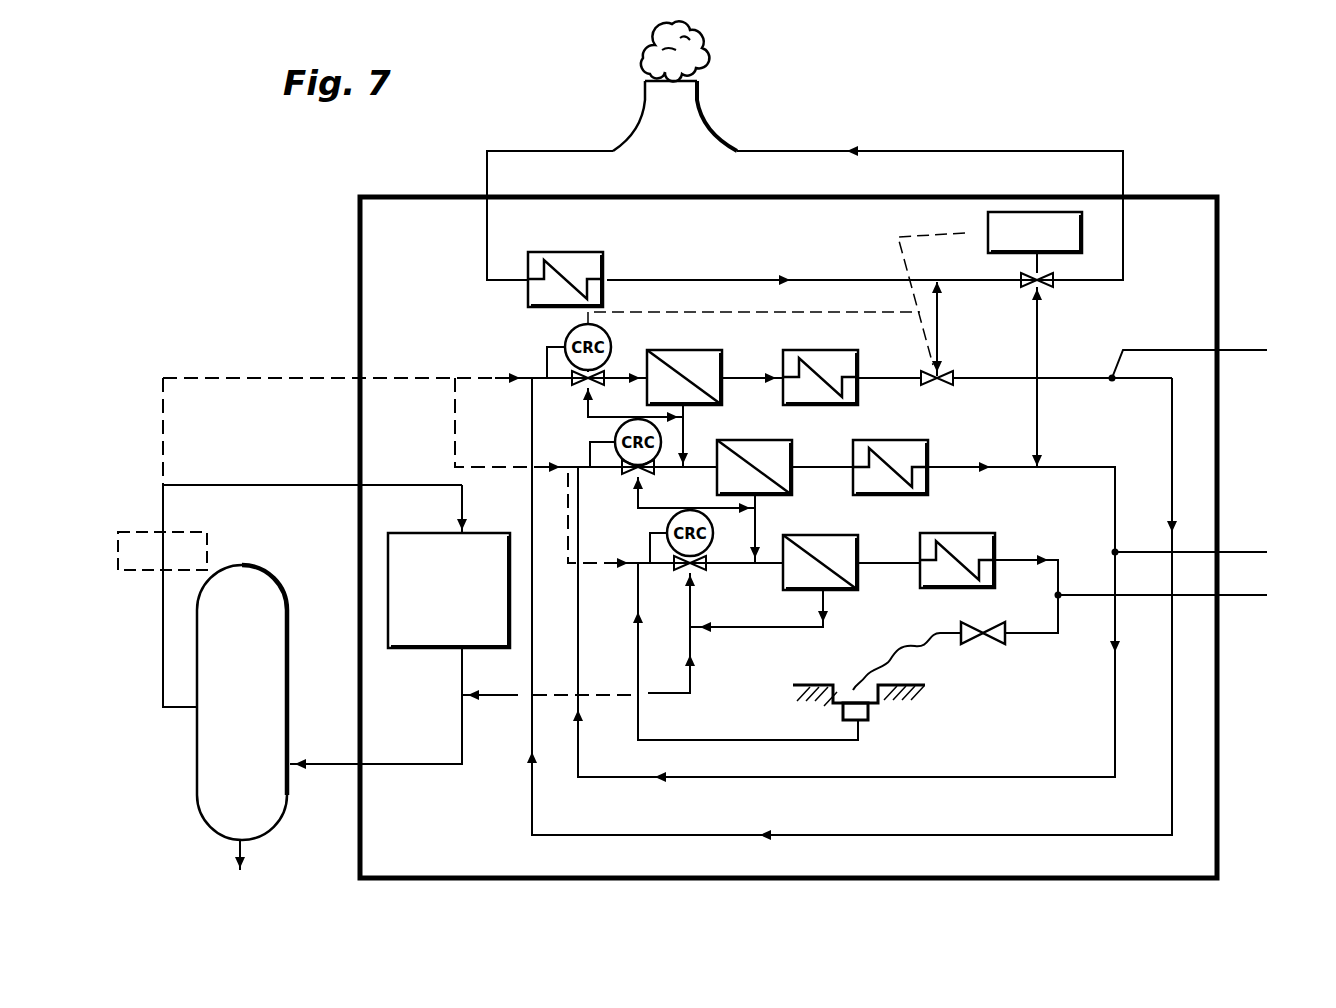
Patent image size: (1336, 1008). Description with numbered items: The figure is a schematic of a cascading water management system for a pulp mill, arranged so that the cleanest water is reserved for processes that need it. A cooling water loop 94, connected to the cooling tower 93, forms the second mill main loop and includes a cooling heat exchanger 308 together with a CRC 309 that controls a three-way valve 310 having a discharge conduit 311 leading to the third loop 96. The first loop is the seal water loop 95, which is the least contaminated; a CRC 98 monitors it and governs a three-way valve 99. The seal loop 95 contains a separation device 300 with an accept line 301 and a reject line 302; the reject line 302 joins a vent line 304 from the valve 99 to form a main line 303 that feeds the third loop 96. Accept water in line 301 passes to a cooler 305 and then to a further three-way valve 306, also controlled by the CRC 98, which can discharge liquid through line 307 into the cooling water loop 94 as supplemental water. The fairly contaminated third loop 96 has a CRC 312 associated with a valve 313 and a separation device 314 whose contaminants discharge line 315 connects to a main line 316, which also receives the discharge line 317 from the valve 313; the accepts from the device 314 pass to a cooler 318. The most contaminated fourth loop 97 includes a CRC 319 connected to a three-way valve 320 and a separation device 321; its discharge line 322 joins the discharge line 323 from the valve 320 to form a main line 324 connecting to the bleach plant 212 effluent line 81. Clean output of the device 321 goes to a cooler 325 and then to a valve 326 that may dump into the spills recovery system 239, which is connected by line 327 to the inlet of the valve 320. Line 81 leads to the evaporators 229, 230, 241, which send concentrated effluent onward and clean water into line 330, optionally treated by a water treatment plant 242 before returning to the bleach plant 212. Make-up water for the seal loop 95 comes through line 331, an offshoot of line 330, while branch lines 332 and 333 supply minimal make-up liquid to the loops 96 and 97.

The cooling tower 93 is at (700, 92).
The cooling water loop 94 is at (902, 151).
The seal water loop 95 is at (913, 589).
The third loop 96 is at (1206, 553).
The fourth loop 97 is at (1177, 596).
The CRC 98 is at (566, 336).
The three-way valve 99 is at (572, 394).
The bleach plant effluent line 81 is at (403, 766).
The bleach plant 212 is at (390, 531).
The evaporator 229 is at (202, 731).
The evaporator 230 is at (202, 731).
The evaporator 241 is at (207, 774).
The spills recovery system 239 is at (1000, 724).
The water treatment plant 242 is at (182, 532).
The separation device 300 is at (696, 342).
The accept line 301 is at (742, 378).
The reject line 302 is at (723, 429).
The main line 303 is at (727, 413).
The vent line 304 is at (633, 405).
The cooler 305 is at (823, 350).
The three-way valve 306 is at (950, 375).
The line 307 is at (940, 300).
The cooling heat exchanger 308 is at (600, 252).
The CRC 309 is at (988, 229).
The three-way valve 310 is at (1055, 272).
The discharge conduit 311 is at (1042, 350).
The CRC 312 is at (614, 436).
The valve 313 is at (650, 480).
The separation device 314 is at (770, 446).
The contaminants discharge line 315 is at (757, 508).
The main line 316 is at (755, 540).
The discharge line 317 is at (636, 508).
The cooler 318 is at (875, 445).
The CRC 319 is at (660, 536).
The three-way valve 320 is at (698, 576).
The separation device 321 is at (832, 535).
The discharge line 322 is at (731, 628).
The discharge line 323 is at (688, 680).
The main line 324 is at (490, 698).
The cooler 325 is at (918, 592).
The valve 326 is at (990, 650).
The line 327 is at (685, 740).
The line 330 is at (163, 498).
The line 331 is at (495, 378).
The branch line 332 is at (546, 464).
The branch line 333 is at (568, 526).